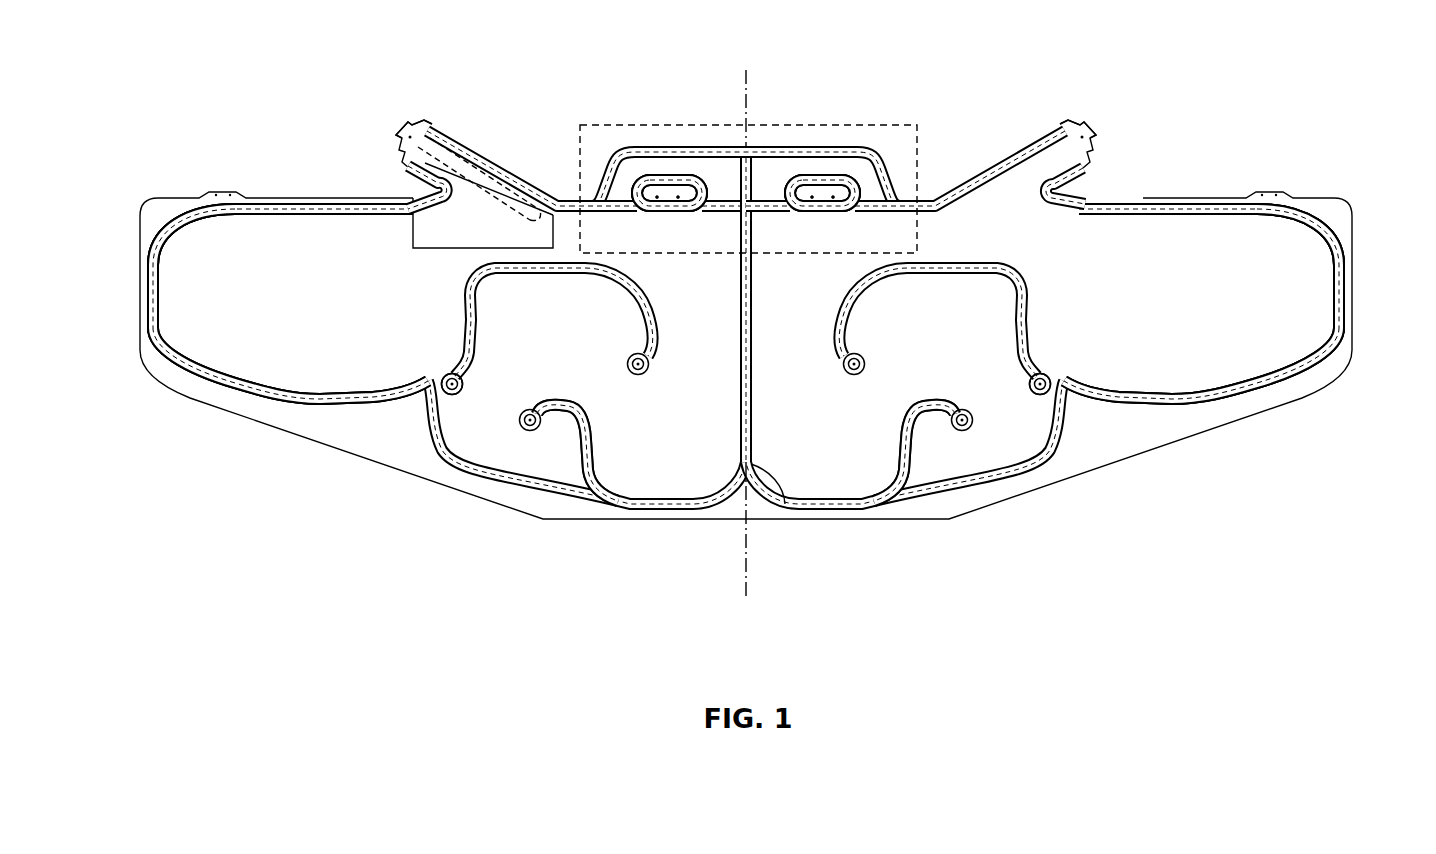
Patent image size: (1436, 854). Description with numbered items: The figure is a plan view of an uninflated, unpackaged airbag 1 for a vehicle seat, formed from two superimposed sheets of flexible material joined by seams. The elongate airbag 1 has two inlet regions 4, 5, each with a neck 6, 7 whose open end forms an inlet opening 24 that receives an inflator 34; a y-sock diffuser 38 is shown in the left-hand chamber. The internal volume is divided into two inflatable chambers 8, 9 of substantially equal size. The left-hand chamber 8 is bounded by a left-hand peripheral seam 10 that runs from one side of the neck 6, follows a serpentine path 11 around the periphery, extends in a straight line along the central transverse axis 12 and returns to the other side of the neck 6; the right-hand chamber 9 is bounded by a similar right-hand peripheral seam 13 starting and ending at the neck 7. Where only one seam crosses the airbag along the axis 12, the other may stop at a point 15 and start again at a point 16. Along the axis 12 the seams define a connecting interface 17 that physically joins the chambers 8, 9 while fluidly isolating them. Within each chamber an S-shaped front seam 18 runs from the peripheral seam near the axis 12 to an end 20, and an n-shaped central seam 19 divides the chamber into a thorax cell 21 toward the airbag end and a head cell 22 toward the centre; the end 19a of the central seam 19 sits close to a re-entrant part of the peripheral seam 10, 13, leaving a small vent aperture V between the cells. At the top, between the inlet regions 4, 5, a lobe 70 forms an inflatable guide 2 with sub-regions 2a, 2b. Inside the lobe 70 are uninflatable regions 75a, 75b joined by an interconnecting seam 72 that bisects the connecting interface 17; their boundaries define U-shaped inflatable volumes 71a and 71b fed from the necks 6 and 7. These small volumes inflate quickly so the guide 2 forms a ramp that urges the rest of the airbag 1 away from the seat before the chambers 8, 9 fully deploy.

The airbag 1 is at (158, 101).
The inflatable guide 2 is at (581, 118).
The sub-region of the guide 2a is at (658, 209).
The sub-region of the guide 2b is at (834, 209).
The inlet region 4 is at (437, 118).
The inlet region 5 is at (1036, 116).
The neck 6 is at (402, 165).
The neck 7 is at (1090, 158).
The inflatable chamber 8 is at (290, 304).
The inflatable chamber 9 is at (1201, 304).
The left-hand peripheral seam 10 is at (153, 277).
The serpentine path 11 is at (313, 422).
The central transverse axis 12 is at (746, 562).
The right-hand peripheral seam 13 is at (1338, 276).
The stopping point 15 is at (774, 505).
The restarting point 16 is at (748, 152).
The connecting interface 17 is at (740, 408).
The front seam 18 is at (563, 413).
The central seam 19 is at (630, 293).
The end of central seam 19a is at (451, 395).
The end of front seam 20 is at (530, 430).
The thorax cell 21 is at (236, 350).
The head cell 22 is at (538, 322).
The inlet opening 24 is at (405, 133).
The inflator 34 is at (478, 174).
The diffuser 38 is at (413, 233).
The lobe 70 is at (616, 162).
The inflatable volume 71a is at (723, 177).
The inflatable volume 71b is at (817, 172).
The interconnecting seam 72 is at (773, 208).
The first uninflatable region 75a is at (667, 190).
The second uninflatable region 75b is at (838, 193).
The vent aperture V is at (441, 380).